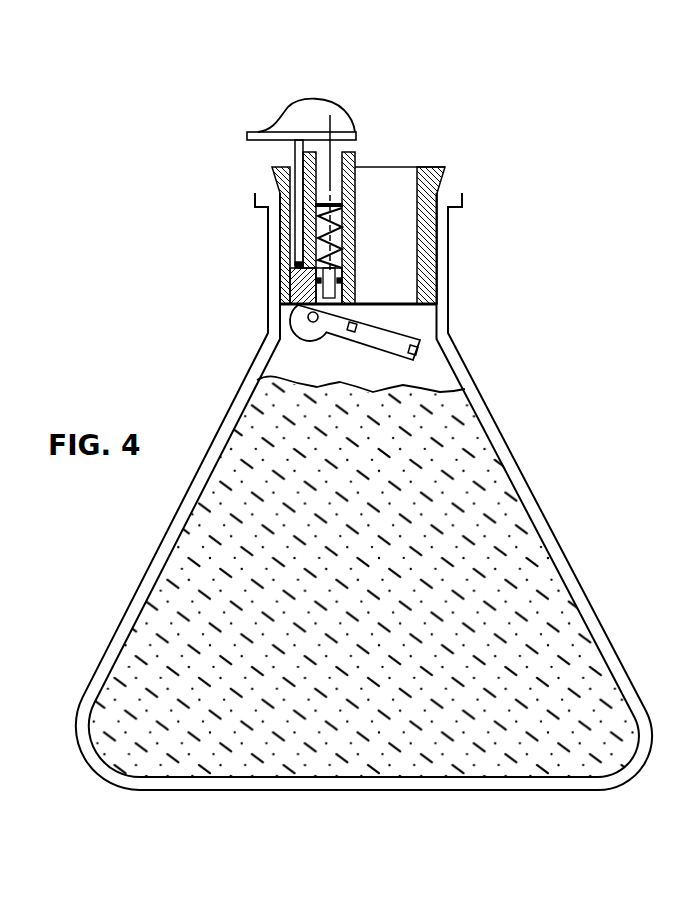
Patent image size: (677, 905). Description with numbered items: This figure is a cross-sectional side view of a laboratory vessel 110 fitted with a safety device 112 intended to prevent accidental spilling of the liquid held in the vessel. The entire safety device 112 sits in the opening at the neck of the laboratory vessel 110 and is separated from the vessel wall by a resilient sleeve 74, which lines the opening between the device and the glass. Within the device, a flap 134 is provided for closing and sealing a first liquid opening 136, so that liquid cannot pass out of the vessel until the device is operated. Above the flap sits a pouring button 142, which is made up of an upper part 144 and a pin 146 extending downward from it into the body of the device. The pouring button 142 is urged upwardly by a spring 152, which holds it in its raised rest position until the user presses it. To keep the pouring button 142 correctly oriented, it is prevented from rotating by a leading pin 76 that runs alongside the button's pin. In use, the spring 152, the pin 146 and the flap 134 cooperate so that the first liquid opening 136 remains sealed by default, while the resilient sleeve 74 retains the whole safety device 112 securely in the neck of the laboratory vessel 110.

The laboratory vessel 110 is at (496, 408).
The safety device 112 is at (313, 206).
The resilient sleeve 74 is at (440, 172).
The leading pin 76 is at (295, 158).
The flap 134 is at (397, 345).
The first liquid opening 136 is at (395, 305).
The pouring button 142 is at (335, 178).
The upper part 144 is at (315, 110).
The pin 146 is at (332, 157).
The spring 152 is at (305, 253).